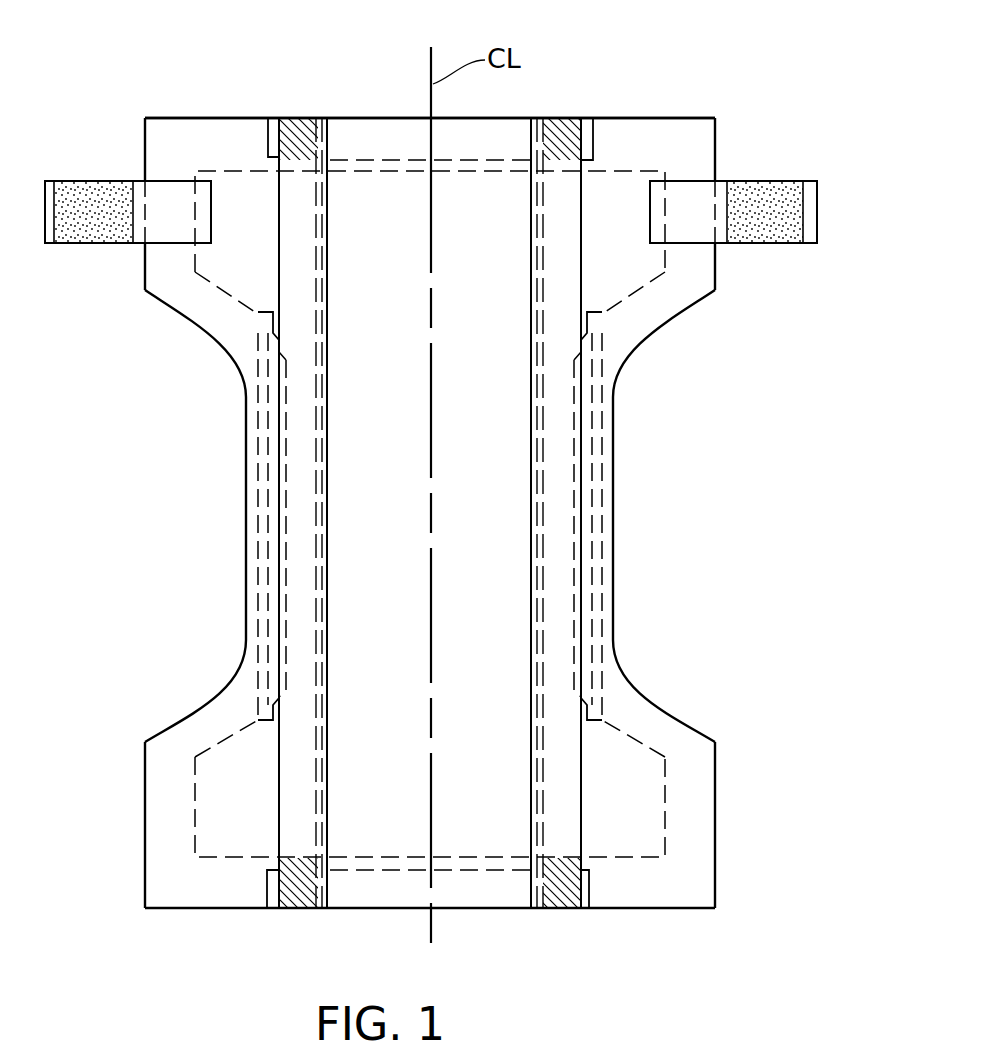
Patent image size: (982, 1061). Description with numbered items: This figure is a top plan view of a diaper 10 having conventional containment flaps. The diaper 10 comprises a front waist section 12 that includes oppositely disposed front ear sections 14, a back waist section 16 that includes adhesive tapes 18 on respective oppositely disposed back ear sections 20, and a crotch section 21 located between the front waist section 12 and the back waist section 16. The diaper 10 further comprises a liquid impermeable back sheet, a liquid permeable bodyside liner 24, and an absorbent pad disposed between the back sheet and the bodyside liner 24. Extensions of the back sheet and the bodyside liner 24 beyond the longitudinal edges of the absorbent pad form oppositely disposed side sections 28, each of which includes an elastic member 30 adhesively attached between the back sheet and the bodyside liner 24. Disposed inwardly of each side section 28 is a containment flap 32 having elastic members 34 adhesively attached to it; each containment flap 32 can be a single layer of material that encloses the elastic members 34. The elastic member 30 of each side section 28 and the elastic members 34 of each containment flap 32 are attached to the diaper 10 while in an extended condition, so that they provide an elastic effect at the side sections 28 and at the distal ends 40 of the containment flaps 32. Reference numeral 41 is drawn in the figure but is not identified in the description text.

The diaper 10 is at (656, 60).
The front waist section 12 is at (163, 851).
The front ear sections 14 is at (178, 898).
The back waist section 16 is at (247, 124).
The adhesive tapes 18 is at (105, 193).
The back ear sections 20 is at (183, 130).
The crotch section 21 is at (613, 456).
The bodyside liner 24 is at (357, 622).
The side sections 28 is at (246, 540).
The elastic member 30 is at (260, 338).
The containment flap 32 is at (300, 262).
The elastic members 34 is at (325, 316).
The distal ends 40 is at (328, 440).
The proximal edge of containment flap 41 is at (278, 268).